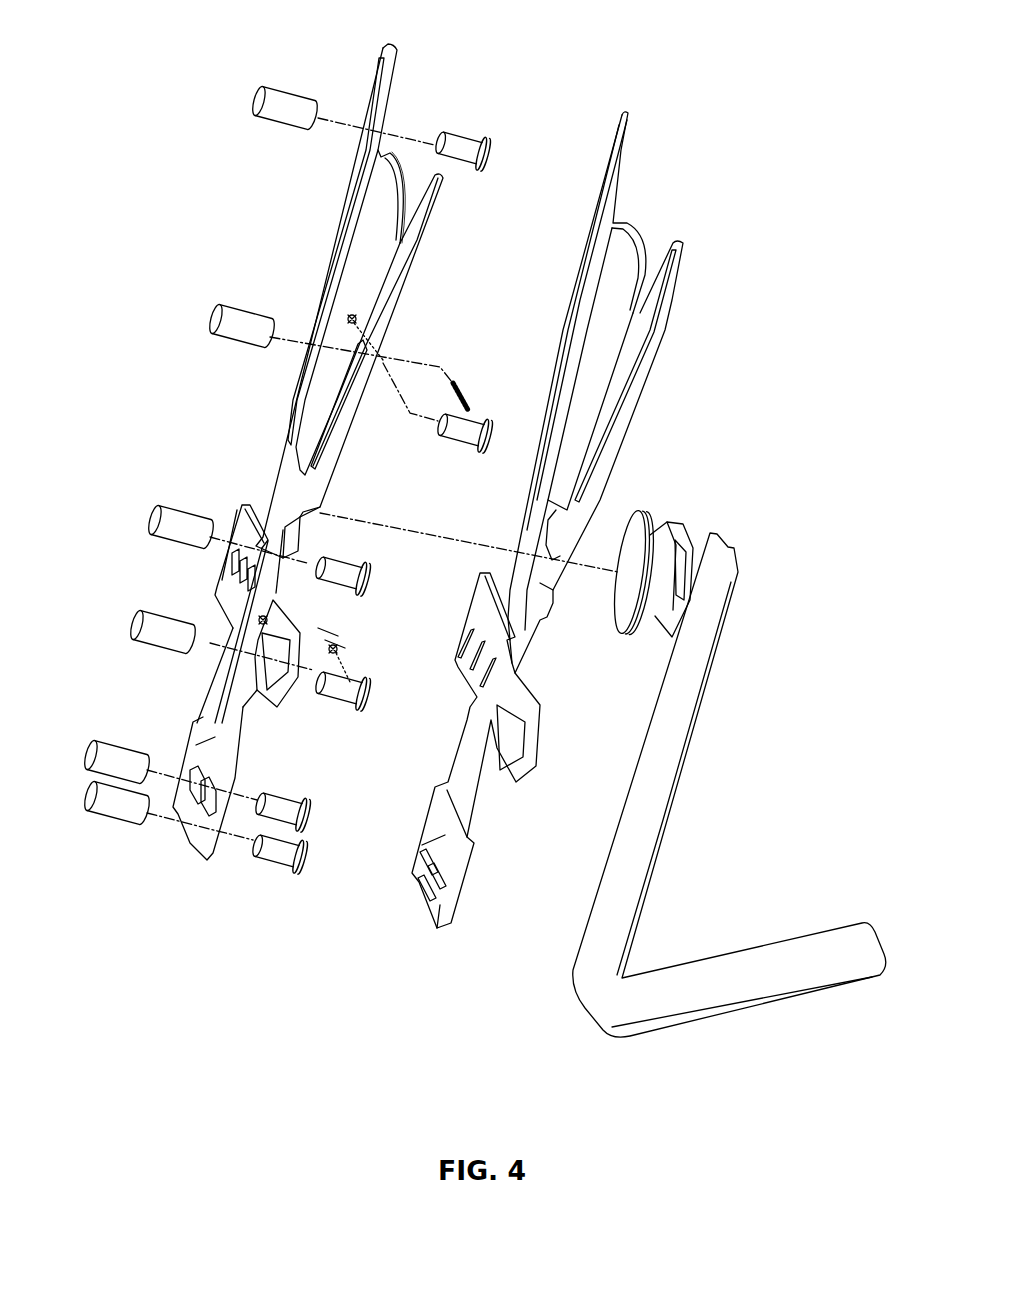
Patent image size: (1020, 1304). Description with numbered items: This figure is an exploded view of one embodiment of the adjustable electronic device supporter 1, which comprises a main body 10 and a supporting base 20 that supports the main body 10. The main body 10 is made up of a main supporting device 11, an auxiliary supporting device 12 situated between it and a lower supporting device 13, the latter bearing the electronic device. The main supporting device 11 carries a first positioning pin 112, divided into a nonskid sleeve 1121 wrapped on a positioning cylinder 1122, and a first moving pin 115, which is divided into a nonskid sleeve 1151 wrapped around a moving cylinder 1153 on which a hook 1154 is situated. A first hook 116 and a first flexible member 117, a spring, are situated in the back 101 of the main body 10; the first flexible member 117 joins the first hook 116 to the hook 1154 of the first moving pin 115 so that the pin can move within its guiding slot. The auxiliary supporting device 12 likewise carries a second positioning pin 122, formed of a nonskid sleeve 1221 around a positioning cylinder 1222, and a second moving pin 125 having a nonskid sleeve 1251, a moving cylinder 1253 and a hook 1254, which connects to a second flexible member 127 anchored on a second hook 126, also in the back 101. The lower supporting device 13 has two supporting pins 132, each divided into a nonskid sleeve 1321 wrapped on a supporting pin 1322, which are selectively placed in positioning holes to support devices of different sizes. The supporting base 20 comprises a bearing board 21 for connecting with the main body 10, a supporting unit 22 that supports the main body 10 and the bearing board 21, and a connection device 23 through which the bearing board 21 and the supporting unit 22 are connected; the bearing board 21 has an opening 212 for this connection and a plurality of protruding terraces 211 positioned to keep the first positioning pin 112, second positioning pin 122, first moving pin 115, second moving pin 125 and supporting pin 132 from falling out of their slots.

The adjustable electronic device supporter 1 is at (131, 88).
The main body 10 is at (210, 81).
The main supporting device 11 is at (249, 208).
The back 101 is at (395, 76).
The first positioning pin 112 is at (324, 93).
The nonskid sleeve 1121 is at (277, 115).
The positioning cylinder 1122 is at (455, 160).
The first moving pin 115 is at (286, 297).
The nonskid sleeve 1151 is at (237, 330).
The moving cylinder 1153 is at (438, 427).
The hook 1154 is at (467, 450).
The first hook 116 is at (355, 318).
The first flexible member 117 is at (469, 395).
The auxiliary supporting device 12 is at (167, 567).
The second positioning pin 122 is at (223, 488).
The nonskid sleeve 1221 is at (192, 527).
The positioning cylinder 1222 is at (340, 574).
The second moving pin 125 is at (373, 753).
The nonskid sleeve 1251 is at (165, 642).
The moving cylinder 1253 is at (331, 687).
The hook 1254 is at (358, 694).
The second hook 126 is at (270, 618).
The second flexible member 127 is at (338, 648).
The lower supporting device 13 is at (120, 676).
The supporting pin 132 is at (276, 928).
The nonskid sleeve 1321 is at (107, 758).
The supporting pin 1322 is at (277, 806).
The supporting base 20 is at (682, 97).
The bearing board 21 is at (628, 134).
The protruding terrace 211 is at (600, 228).
The opening 212 is at (517, 588).
The supporting unit 22 is at (743, 995).
The connection device 23 is at (637, 590).